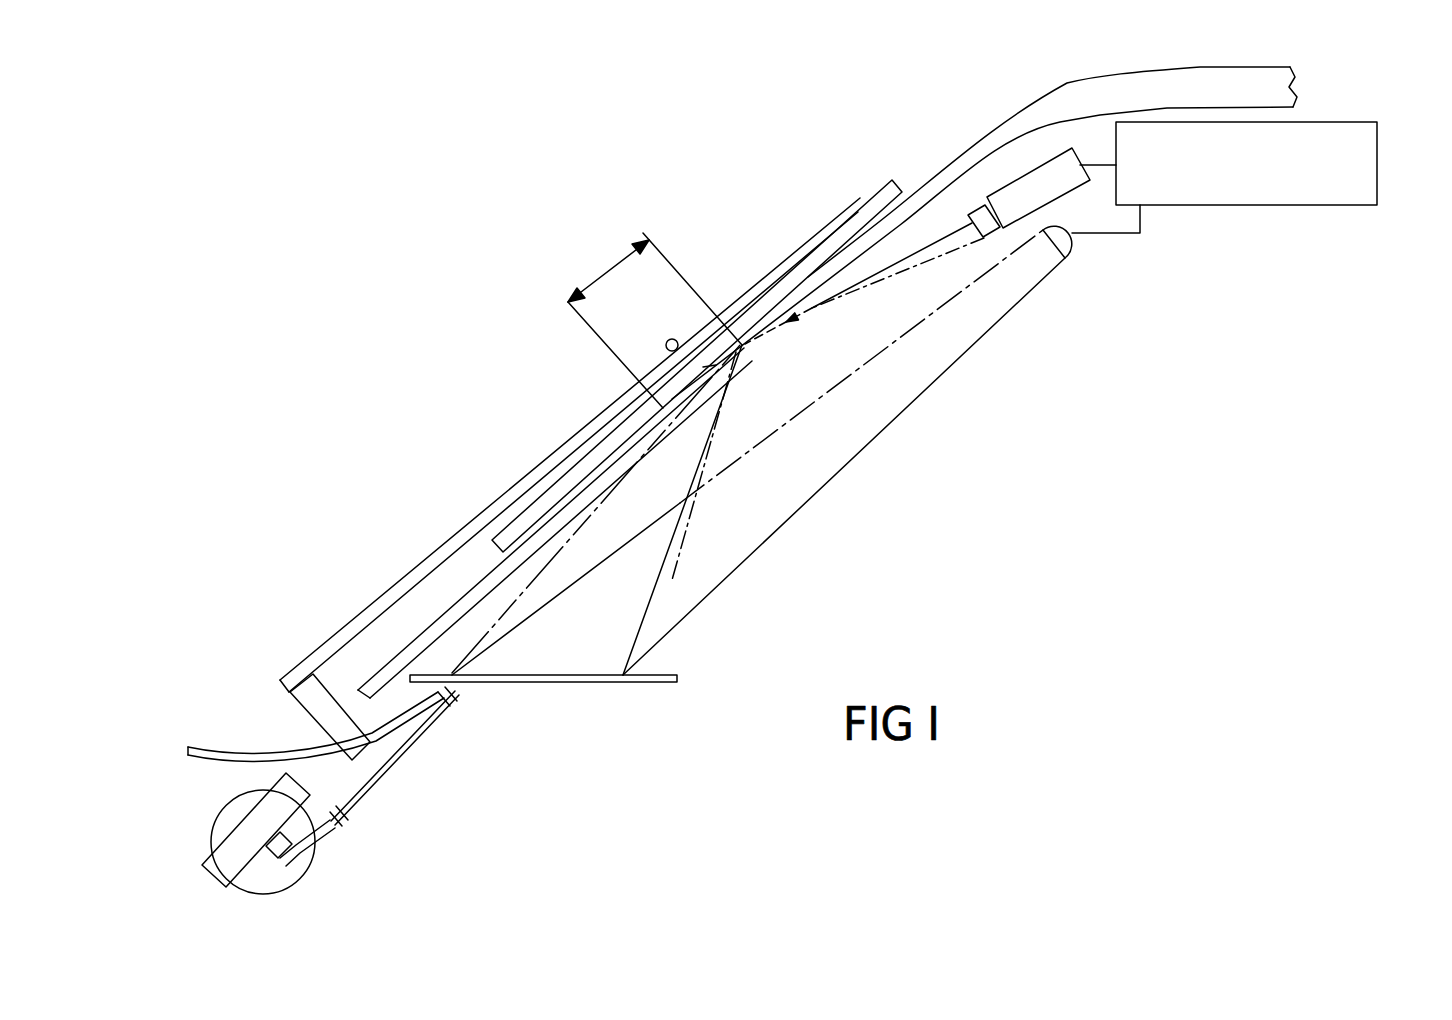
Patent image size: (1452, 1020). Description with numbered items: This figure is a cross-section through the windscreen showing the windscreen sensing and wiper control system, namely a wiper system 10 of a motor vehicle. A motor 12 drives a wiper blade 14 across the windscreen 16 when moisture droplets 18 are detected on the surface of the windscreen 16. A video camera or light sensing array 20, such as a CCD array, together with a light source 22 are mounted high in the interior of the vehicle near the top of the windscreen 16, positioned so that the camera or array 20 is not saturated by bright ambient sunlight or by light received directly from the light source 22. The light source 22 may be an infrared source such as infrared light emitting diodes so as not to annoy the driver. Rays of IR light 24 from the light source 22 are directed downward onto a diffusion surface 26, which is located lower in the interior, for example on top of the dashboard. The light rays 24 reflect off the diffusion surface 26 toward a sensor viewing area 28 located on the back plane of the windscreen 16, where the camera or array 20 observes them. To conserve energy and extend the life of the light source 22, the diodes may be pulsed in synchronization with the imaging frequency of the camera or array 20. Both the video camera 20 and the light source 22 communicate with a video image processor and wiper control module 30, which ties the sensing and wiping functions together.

The wiper system 10 is at (855, 106).
The motor 12 is at (313, 857).
The wiper blade 14 is at (877, 190).
The windscreen 16 is at (402, 651).
The moisture droplets 18 is at (704, 368).
The video camera or light sensing array 20 is at (1006, 183).
The light source 22 is at (1073, 252).
The rays of IR light 24 is at (677, 537).
The diffusion surface 26 is at (675, 673).
The sensor viewing area 28 is at (655, 320).
The video image processor and wiper control module 30 is at (1358, 122).